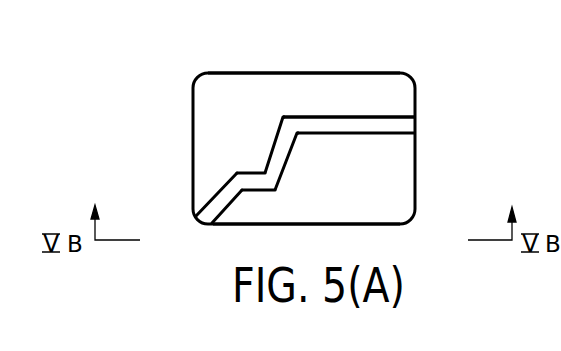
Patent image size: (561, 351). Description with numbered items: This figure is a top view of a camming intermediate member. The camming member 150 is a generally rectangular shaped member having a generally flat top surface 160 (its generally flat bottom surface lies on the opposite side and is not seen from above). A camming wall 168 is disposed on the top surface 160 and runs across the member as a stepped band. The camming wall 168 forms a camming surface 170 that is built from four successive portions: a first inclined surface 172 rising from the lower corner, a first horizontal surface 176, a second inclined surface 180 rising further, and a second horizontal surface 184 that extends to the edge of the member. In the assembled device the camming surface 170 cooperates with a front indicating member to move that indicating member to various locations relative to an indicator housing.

The camming member 150 is at (180, 80).
The top surface 160 is at (372, 202).
The camming wall 168 is at (385, 117).
The camming surface 170 is at (282, 103).
The first inclined surface 172 is at (218, 193).
The first horizontal surface 176 is at (252, 172).
The second inclined surface 180 is at (273, 142).
The second horizontal surface 184 is at (347, 117).